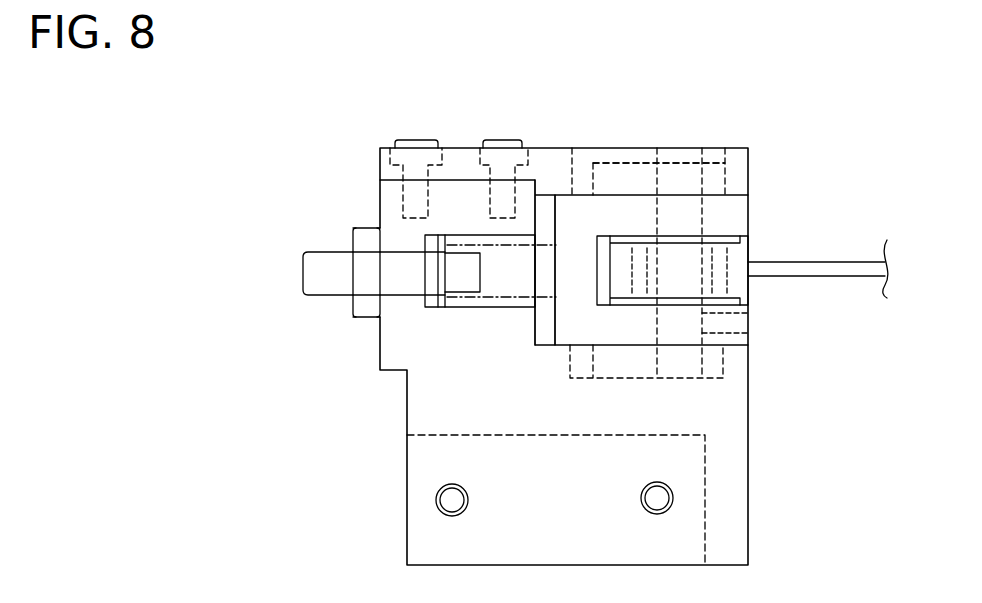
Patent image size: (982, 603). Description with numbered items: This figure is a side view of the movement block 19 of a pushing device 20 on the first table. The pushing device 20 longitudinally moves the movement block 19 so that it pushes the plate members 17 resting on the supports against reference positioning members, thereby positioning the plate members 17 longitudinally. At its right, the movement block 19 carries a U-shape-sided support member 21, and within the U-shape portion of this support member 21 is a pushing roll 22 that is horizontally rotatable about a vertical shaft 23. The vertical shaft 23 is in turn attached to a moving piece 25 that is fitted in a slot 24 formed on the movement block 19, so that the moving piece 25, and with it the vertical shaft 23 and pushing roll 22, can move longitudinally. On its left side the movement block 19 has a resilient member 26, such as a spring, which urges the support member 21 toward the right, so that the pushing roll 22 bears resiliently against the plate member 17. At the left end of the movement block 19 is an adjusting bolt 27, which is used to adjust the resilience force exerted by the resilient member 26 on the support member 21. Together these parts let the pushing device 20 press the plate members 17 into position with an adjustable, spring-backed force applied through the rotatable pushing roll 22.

The plate member 17 is at (836, 277).
The movement block 19 is at (407, 413).
The pushing device 20 is at (332, 157).
The support member 21 is at (615, 236).
The pushing roll 22 is at (740, 255).
The vertical shaft 23 is at (703, 217).
The slot 24 is at (572, 147).
The moving piece 25 is at (637, 143).
The resilient member 26 is at (453, 257).
The adjusting bolt 27 is at (318, 252).